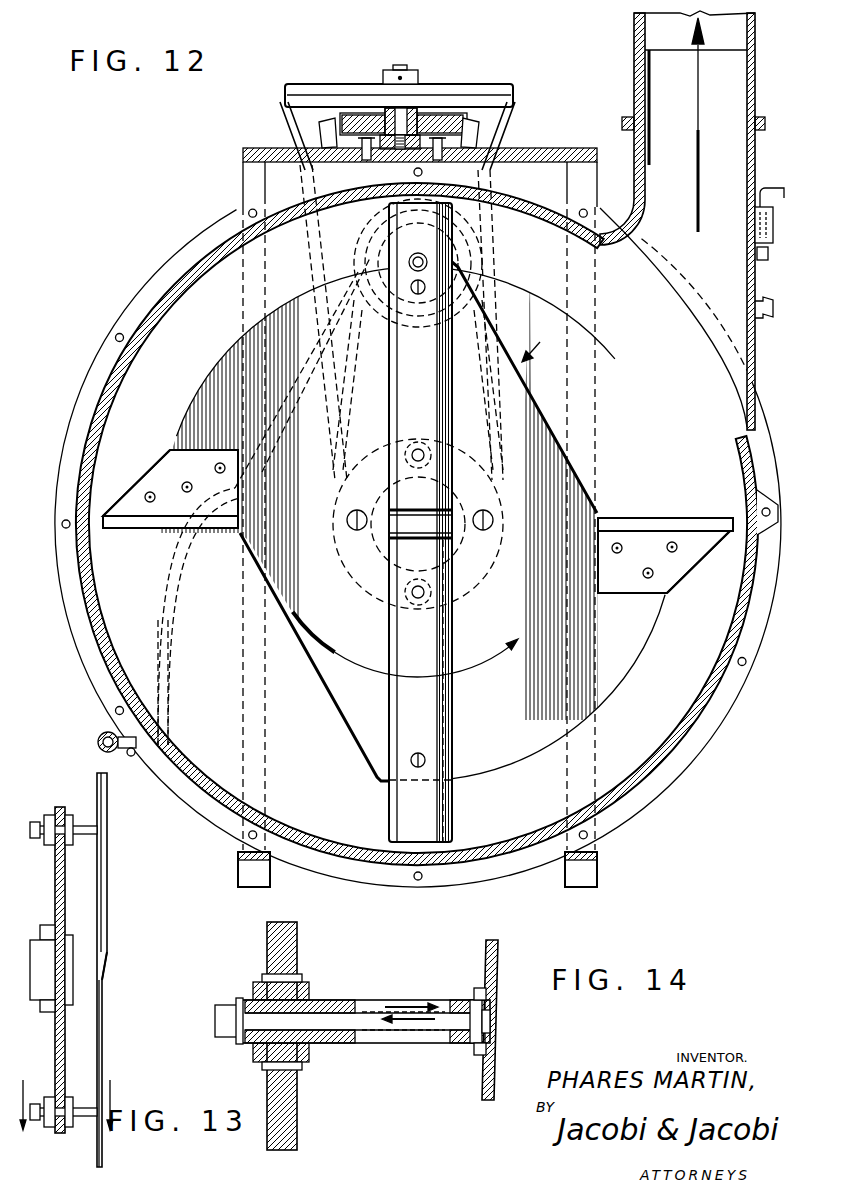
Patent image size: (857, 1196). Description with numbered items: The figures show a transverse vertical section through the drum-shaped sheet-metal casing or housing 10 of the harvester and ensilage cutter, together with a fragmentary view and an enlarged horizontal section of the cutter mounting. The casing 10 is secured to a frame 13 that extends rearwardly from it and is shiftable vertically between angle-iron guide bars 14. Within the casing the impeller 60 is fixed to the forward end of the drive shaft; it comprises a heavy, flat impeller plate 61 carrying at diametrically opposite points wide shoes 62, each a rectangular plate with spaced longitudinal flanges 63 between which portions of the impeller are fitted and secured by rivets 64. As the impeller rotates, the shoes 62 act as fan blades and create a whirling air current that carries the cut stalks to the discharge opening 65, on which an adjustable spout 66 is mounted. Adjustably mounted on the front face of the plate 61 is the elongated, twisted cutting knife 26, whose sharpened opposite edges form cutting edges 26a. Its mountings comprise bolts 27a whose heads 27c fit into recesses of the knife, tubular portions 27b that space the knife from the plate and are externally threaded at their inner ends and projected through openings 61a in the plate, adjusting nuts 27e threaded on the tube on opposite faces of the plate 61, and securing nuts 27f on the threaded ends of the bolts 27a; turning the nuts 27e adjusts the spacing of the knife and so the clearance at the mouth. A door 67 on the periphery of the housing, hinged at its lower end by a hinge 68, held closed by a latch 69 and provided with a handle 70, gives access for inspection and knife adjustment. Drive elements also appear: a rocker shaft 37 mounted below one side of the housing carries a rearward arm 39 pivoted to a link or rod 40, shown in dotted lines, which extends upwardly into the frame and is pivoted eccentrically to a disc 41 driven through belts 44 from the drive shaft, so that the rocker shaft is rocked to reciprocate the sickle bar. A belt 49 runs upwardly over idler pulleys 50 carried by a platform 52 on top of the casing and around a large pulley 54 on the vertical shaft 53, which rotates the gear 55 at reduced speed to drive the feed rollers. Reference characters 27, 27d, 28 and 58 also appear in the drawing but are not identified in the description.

In FIG. 12, the casing or housing 10 is at (175, 312).
In FIG. 12, the frame 13 is at (271, 876).
In FIG. 13, the guide bars 14 is at (76, 1093).
In FIG. 12, the cutting knife 26 is at (440, 655).
In FIG. 12, the cutting edges 26a is at (390, 252).
In FIG. 13, the cutting edges 26a is at (118, 905).
In FIG. 14, the cutting edges 26a is at (508, 922).
In FIG. 12, the beater bar 27 is at (452, 224).
In FIG. 13, the beater bar 27 is at (107, 884).
In FIG. 14, the beater bar 27 is at (484, 972).
In FIG. 12, the bolts 27a is at (412, 292).
In FIG. 14, the bolts 27a is at (342, 1010).
In FIG. 13, the tubular portions 27b is at (82, 814).
In FIG. 14, the tubular portions 27b is at (398, 1030).
In FIG. 14, the bolt heads 27c is at (498, 1026).
In FIG. 12, the lock nut 27d is at (425, 287).
In FIG. 14, the lock nut 27d is at (508, 992).
In FIG. 13, the adjusting nuts 27e is at (50, 862).
In FIG. 14, the adjusting nuts 27e is at (270, 978).
In FIG. 13, the securing nuts 27f is at (36, 820).
In FIG. 14, the securing nuts 27f is at (222, 1012).
In FIG. 12, the hub 28 is at (393, 527).
In FIG. 13, the hub 28 is at (120, 962).
In FIG. 12, the rocker shaft 37 is at (97, 738).
In FIG. 12, the arm 39 is at (166, 692).
In FIG. 12, the link or rod 40 is at (340, 410).
In FIG. 12, the disc 41 is at (352, 315).
In FIG. 12, the belts 44 is at (345, 388).
In FIG. 12, the belt 49 is at (492, 92).
In FIG. 12, the idler pulleys 50 is at (280, 124).
In FIG. 12, the platform 52 is at (243, 154).
In FIG. 12, the vertical shaft 53 is at (402, 65).
In FIG. 12, the large pulley 54 is at (442, 92).
In FIG. 12, the gear 55 is at (362, 115).
In FIG. 12, the baffle plate 58 is at (700, 300).
In FIG. 12, the impeller 60 is at (541, 340).
In FIG. 12, the impeller plate 61 is at (527, 410).
In FIG. 13, the impeller plate 61 is at (66, 867).
In FIG. 14, the impeller plate 61 is at (298, 946).
In FIG. 14, the openings 61a is at (266, 1072).
In FIG. 12, the shoes 62 is at (146, 528).
In FIG. 12, the flanges 63 is at (692, 588).
In FIG. 12, the rivets 64 is at (185, 487).
In FIG. 12, the discharge opening 65 is at (746, 95).
In FIG. 12, the adjustable spout 66 is at (632, 39).
In FIG. 12, the door 67 is at (747, 283).
In FIG. 12, the hinge 68 is at (748, 480).
In FIG. 12, the latch 69 is at (755, 232).
In FIG. 12, the handle 70 is at (771, 320).